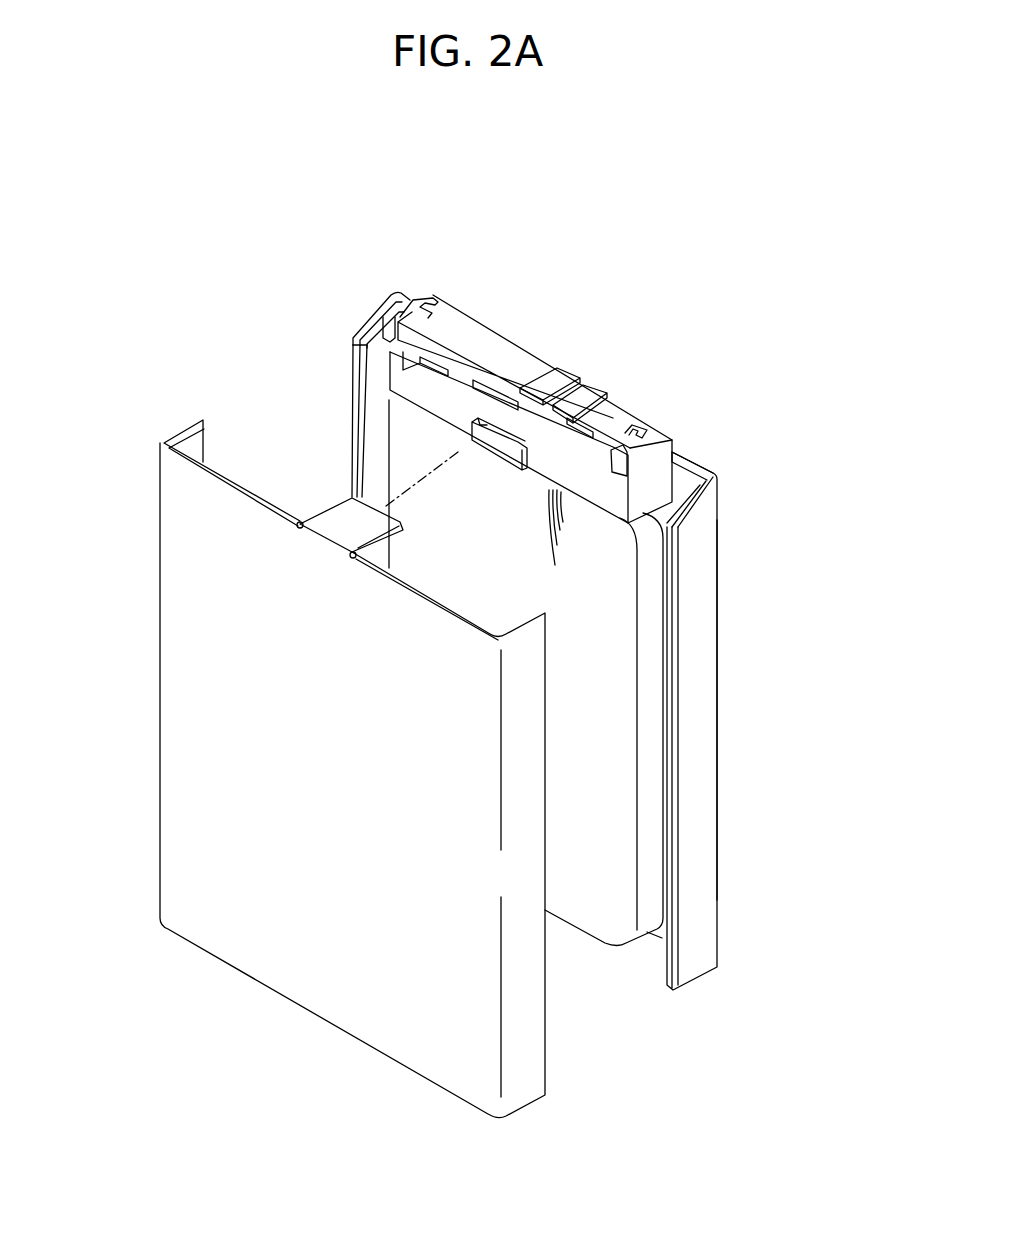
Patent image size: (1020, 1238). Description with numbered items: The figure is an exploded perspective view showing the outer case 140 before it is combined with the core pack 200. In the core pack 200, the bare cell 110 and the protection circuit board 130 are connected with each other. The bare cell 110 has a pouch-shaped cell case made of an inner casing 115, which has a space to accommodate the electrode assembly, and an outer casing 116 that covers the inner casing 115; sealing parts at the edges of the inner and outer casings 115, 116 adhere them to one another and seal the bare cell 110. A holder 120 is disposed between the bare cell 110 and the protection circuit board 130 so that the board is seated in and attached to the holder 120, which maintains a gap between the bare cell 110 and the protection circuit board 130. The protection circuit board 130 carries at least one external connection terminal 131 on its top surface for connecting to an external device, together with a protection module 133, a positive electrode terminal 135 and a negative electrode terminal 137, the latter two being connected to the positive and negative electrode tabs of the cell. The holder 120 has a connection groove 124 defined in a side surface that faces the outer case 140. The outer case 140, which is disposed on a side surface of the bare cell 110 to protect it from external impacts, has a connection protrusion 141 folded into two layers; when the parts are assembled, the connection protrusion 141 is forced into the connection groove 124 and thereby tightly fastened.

The core pack 200 is at (349, 319).
The bare cell 110 is at (738, 771).
The inner casing 115 is at (682, 495).
The outer casing 116 is at (702, 562).
The holder 120 is at (673, 474).
The connection groove 124 is at (470, 440).
The protection circuit board 130 is at (480, 343).
The external connection terminal 131 is at (552, 386).
The protection module 133 is at (497, 377).
The positive electrode terminal 135 is at (442, 316).
The negative electrode terminal 137 is at (594, 445).
The outer case 140 is at (178, 634).
The connection protrusion 141 is at (335, 520).